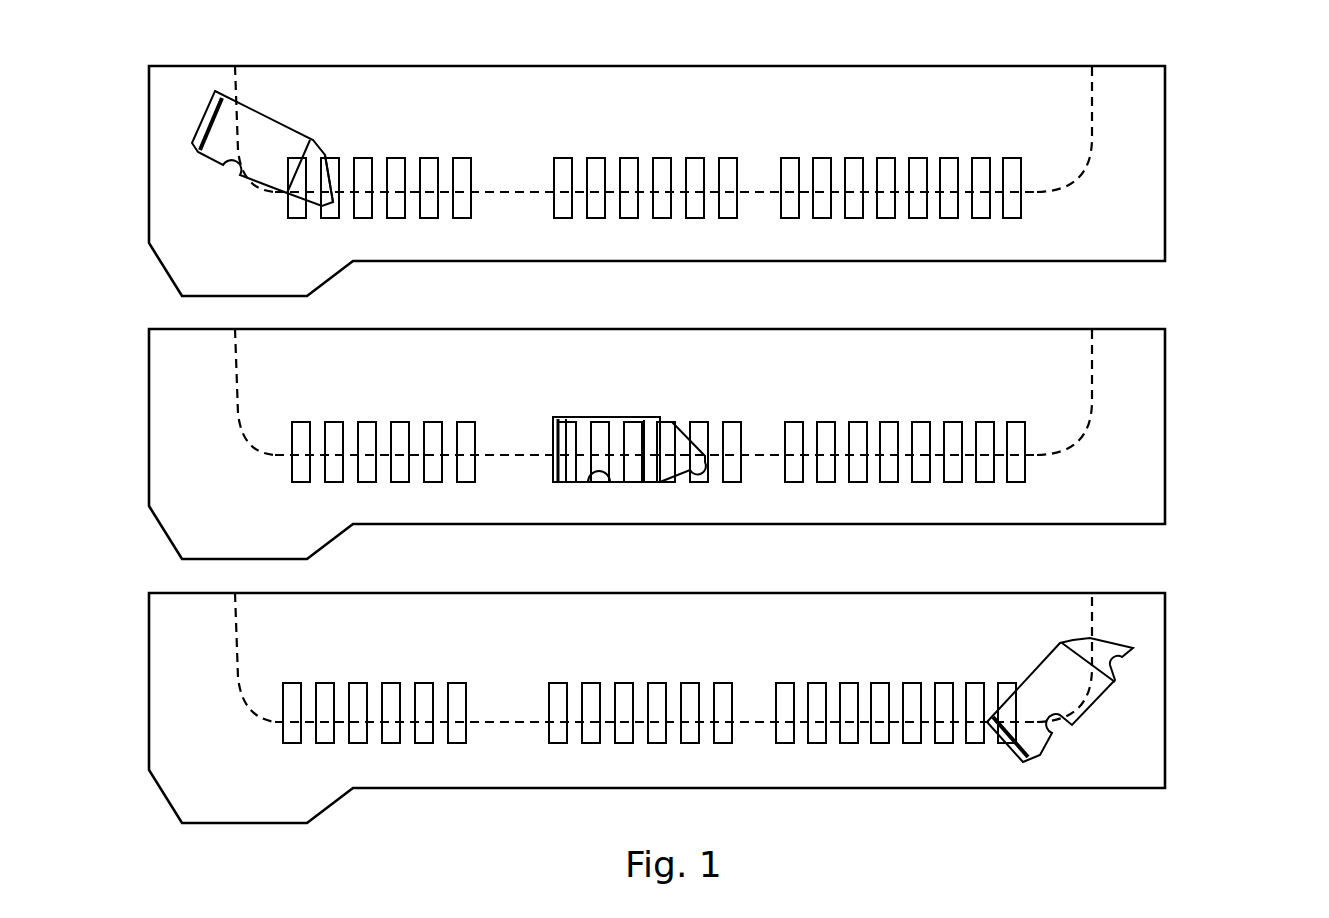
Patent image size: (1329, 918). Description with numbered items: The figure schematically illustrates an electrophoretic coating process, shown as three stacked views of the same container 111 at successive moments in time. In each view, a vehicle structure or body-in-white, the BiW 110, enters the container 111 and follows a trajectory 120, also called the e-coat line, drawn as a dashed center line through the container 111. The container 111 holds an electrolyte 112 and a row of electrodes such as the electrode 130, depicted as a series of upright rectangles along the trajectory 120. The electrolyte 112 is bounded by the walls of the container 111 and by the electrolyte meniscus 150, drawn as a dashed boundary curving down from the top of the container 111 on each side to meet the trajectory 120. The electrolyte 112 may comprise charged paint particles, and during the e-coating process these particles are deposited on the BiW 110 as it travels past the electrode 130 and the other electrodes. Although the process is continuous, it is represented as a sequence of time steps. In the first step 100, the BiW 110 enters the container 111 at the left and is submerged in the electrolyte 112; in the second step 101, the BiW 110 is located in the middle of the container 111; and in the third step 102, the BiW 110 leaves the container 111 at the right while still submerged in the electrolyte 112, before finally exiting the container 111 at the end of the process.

The first step 100 is at (1232, 167).
The second step 101 is at (1232, 430).
The third step 102 is at (1232, 701).
The vehicle structure or BiW 110 is at (313, 140).
The container 111 is at (148, 160).
The electrolyte 112 is at (653, 98).
The trajectory 120 is at (478, 191).
The electrode 130 is at (915, 158).
The electrolyte meniscus 150 is at (423, 65).